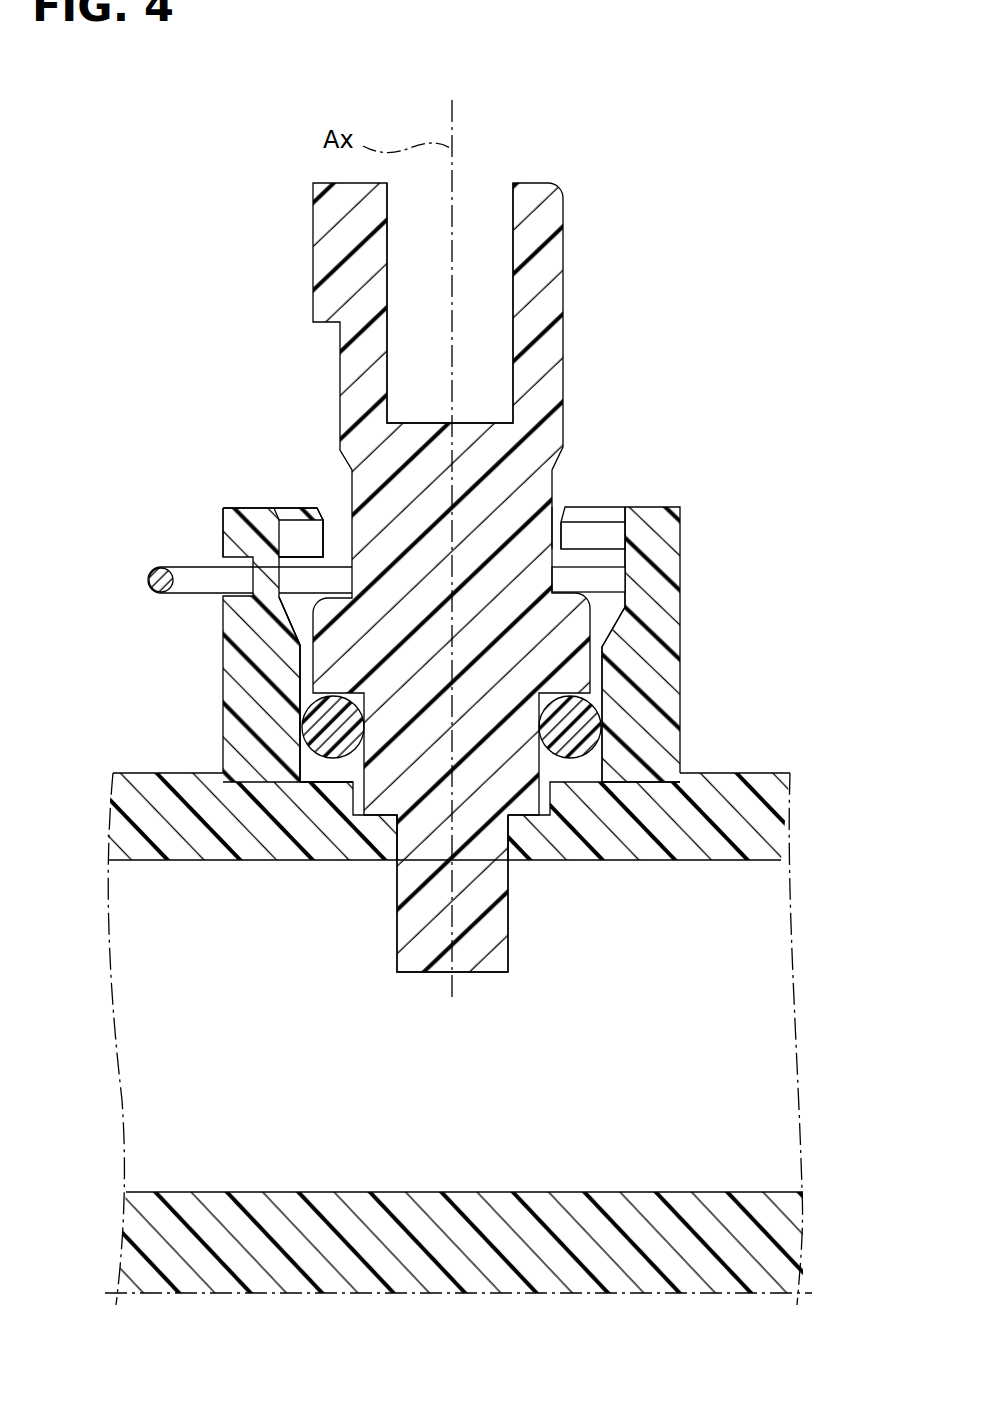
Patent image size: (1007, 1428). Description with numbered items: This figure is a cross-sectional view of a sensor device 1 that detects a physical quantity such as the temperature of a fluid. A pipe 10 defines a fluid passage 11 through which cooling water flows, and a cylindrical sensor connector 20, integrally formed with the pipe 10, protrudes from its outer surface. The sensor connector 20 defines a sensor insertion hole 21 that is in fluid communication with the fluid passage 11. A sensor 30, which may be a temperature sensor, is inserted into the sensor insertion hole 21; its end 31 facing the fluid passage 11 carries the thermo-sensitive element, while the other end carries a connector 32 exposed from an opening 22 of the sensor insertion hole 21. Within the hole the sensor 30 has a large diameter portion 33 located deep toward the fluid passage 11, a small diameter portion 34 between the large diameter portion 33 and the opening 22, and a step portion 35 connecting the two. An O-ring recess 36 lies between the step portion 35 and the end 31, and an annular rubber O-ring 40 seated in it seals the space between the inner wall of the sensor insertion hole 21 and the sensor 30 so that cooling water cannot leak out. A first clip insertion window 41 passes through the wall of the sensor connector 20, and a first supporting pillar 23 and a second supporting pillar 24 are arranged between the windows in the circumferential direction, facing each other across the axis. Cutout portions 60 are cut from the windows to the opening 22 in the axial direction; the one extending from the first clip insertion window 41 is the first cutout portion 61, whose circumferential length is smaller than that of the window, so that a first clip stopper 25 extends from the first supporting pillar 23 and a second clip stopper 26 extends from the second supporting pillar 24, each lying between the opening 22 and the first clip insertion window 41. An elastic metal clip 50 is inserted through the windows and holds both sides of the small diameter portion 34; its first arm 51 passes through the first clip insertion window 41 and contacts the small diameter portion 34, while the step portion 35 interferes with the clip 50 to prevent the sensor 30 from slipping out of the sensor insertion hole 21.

The sensor device 1 is at (767, 108).
The pipe 10 is at (752, 828).
The fluid passage 11 is at (735, 1053).
The sensor connector 20 is at (670, 705).
The sensor insertion hole 21 is at (600, 651).
The opening 22 is at (282, 508).
The first supporting pillar 23 is at (265, 578).
The second supporting pillar 24 is at (667, 563).
The first clip stopper 25 is at (306, 533).
The second clip stopper 26 is at (602, 533).
The sensor 30 is at (565, 285).
The end 31 is at (487, 973).
The connector 32 is at (487, 202).
The large diameter portion 33 is at (313, 670).
The small diameter portion 34 is at (343, 593).
The step portion 35 is at (348, 607).
The O-ring recess 36 is at (353, 782).
The O-ring 40 is at (568, 742).
The first clip insertion window 41 is at (600, 533).
The clip 50 is at (187, 565).
The first arm 51 is at (610, 578).
The cutout portions 60 is at (560, 537).
The first cutout portion 61 is at (560, 537).